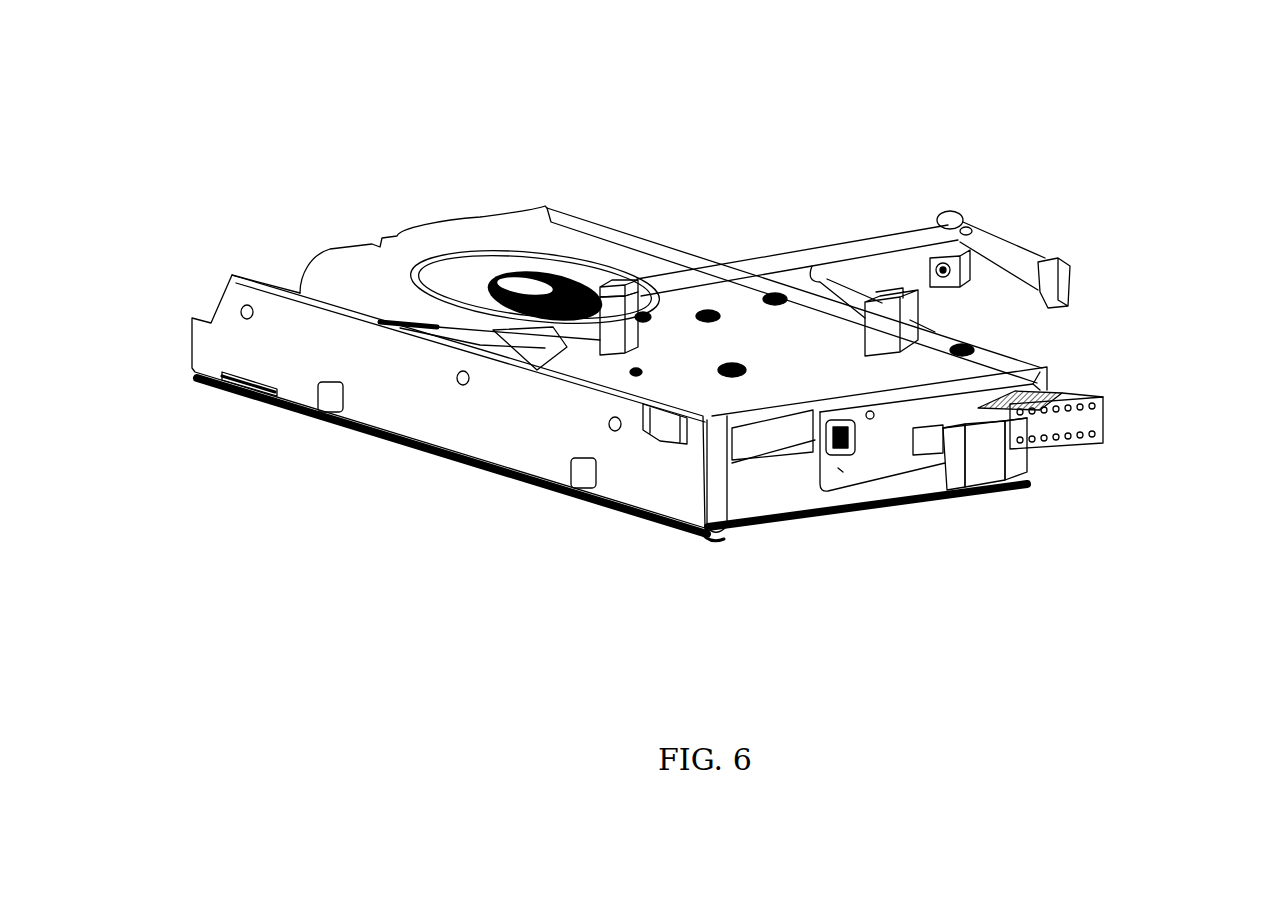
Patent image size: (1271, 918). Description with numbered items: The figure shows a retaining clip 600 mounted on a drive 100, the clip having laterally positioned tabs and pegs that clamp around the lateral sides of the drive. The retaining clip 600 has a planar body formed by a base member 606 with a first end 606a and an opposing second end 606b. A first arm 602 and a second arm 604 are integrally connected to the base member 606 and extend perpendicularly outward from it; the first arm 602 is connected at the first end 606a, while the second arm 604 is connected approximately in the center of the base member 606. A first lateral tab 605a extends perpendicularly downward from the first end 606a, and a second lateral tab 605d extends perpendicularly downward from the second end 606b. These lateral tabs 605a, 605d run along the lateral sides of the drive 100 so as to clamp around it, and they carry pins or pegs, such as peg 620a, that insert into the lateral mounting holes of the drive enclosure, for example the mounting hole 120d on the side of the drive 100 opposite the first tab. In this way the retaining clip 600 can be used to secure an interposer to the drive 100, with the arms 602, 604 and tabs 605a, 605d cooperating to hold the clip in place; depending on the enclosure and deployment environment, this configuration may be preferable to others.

The drive 100 is at (343, 250).
The lateral mounting hole 120d is at (614, 435).
The retaining clip 600 is at (912, 188).
The first arm 602 is at (1020, 258).
The second arm 604 is at (810, 280).
The first lateral tab 605a is at (975, 225).
The second lateral tab 605d is at (610, 320).
The base member 606 is at (773, 262).
The first end 606a is at (978, 200).
The second end 606b is at (632, 272).
The peg 620a is at (963, 280).